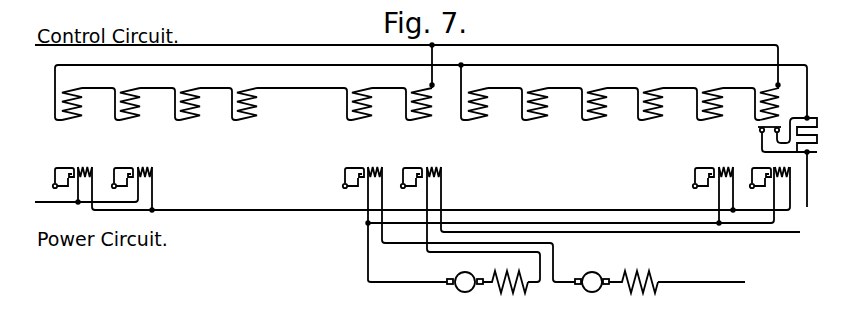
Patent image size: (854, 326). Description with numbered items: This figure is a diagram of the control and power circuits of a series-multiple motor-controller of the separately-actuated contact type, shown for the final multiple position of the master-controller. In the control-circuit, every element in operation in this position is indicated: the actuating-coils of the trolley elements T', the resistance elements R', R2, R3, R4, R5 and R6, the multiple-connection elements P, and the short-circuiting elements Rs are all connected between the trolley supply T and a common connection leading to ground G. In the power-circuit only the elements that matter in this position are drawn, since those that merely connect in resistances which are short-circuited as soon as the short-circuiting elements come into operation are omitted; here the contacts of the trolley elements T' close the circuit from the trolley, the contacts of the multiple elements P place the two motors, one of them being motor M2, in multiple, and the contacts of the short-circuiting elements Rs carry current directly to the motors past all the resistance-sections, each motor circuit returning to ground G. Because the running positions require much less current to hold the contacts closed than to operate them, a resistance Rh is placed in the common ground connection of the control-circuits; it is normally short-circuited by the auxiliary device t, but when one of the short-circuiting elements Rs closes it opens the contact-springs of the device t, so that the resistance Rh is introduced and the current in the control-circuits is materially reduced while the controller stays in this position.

The trolley T is at (397, 124).
The trolley contact elements T' is at (102, 84).
The resistance-controlling element R' is at (190, 84).
The resistance-controlling element R2 is at (247, 84).
The multiple-connection elements P is at (392, 84).
The resistance-controlling element R3 is at (478, 84).
The resistance-controlling element R4 is at (537, 84).
The resistance-controlling element R5 is at (597, 84).
The resistance-controlling element R6 is at (653, 84).
The short-circuiting elements Rs is at (740, 84).
The resistance Rh is at (812, 145).
The auxiliary device t is at (760, 132).
The ground G is at (632, 223).
The motor M2 is at (616, 296).